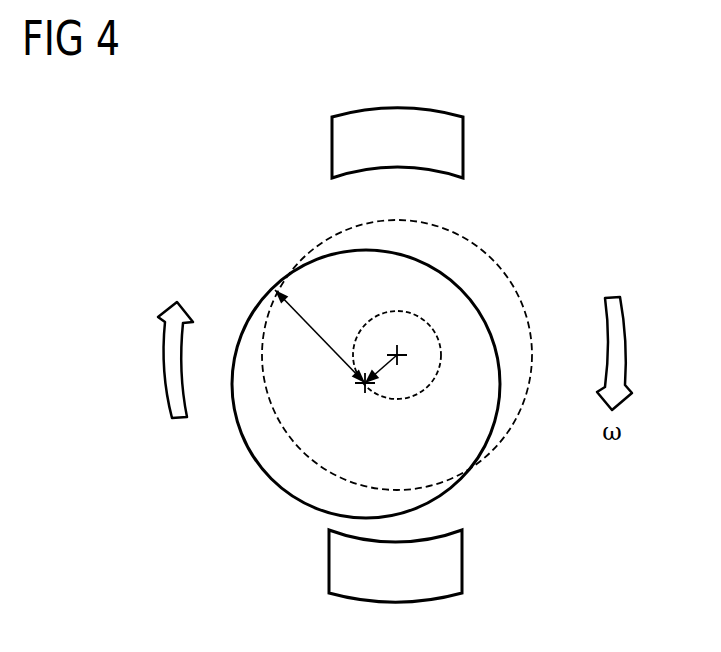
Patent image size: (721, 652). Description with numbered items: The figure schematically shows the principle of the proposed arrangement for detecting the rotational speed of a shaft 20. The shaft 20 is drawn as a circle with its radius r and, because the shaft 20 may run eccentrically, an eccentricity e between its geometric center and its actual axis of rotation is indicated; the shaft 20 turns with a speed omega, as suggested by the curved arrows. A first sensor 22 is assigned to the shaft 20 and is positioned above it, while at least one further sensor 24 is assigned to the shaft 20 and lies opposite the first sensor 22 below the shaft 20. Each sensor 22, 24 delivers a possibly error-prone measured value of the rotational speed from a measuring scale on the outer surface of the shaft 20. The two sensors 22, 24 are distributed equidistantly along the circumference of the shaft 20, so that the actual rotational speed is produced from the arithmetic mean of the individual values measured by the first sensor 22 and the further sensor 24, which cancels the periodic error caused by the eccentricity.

The shaft 20 is at (270, 482).
The first sensor 22 is at (332, 140).
The further sensor 24 is at (462, 556).